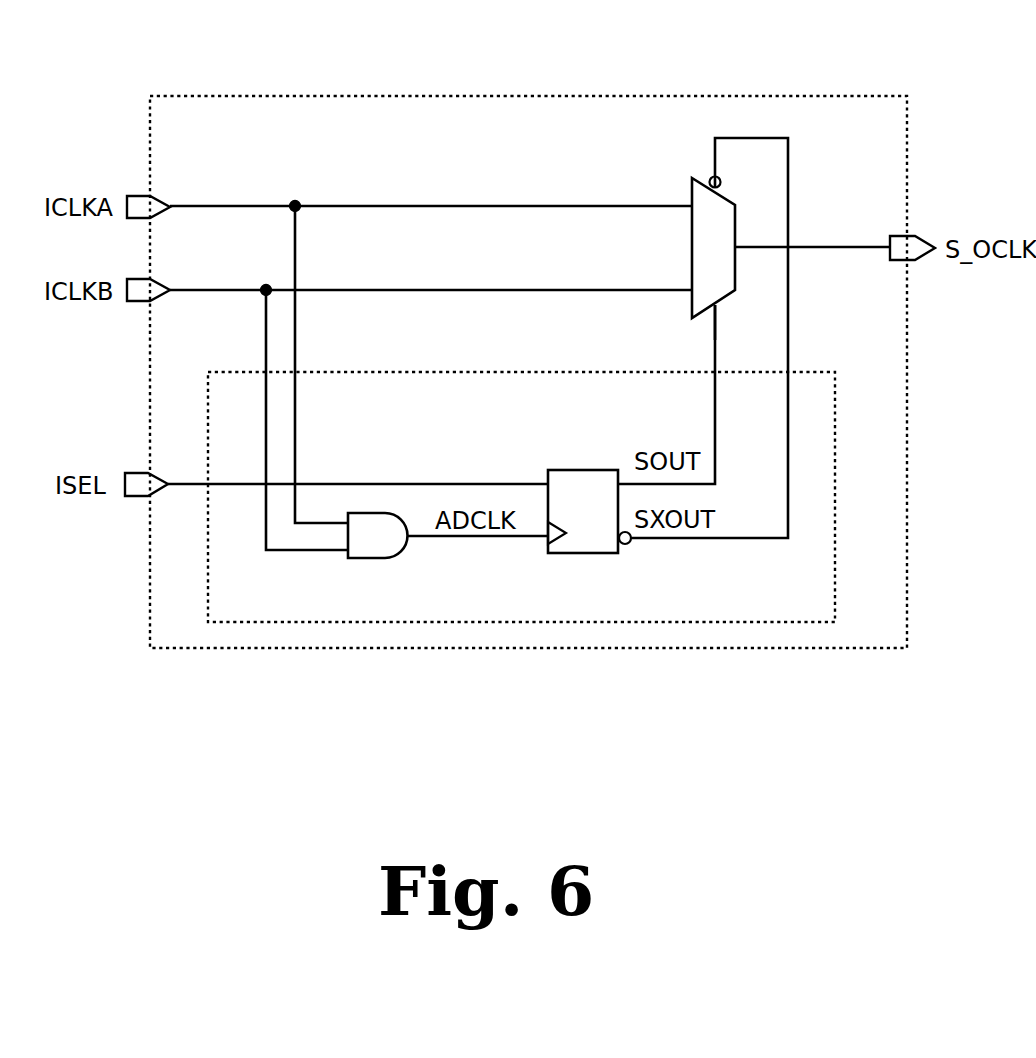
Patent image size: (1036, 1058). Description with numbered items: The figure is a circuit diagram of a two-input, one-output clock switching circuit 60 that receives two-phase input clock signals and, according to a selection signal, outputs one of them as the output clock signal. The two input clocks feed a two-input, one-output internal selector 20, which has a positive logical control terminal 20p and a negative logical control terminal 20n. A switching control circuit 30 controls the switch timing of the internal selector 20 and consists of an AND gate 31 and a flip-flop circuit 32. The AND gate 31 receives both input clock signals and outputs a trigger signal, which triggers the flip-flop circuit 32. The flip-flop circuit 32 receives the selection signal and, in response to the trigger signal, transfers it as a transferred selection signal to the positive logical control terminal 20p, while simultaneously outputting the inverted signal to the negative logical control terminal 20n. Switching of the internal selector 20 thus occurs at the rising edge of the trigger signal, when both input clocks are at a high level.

The 2-input/1-output clock switching circuit 60 is at (275, 96).
The internal selector 20 is at (691, 192).
The negative logical control terminal 20n is at (722, 180).
The positive logical control terminal 20p is at (722, 318).
The switching control circuit 30 is at (401, 372).
The AND gate 31 is at (386, 560).
The flip-flop circuit 32 is at (592, 470).